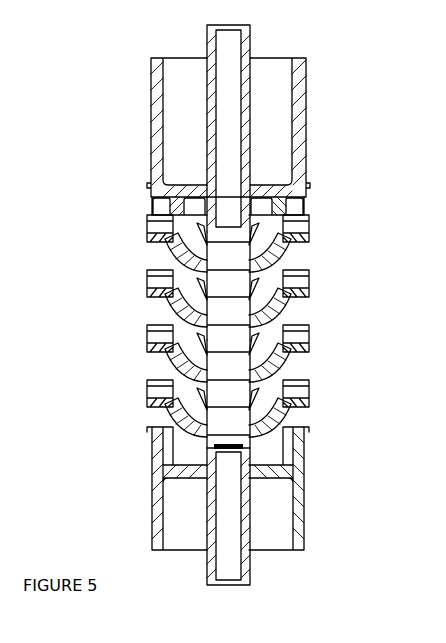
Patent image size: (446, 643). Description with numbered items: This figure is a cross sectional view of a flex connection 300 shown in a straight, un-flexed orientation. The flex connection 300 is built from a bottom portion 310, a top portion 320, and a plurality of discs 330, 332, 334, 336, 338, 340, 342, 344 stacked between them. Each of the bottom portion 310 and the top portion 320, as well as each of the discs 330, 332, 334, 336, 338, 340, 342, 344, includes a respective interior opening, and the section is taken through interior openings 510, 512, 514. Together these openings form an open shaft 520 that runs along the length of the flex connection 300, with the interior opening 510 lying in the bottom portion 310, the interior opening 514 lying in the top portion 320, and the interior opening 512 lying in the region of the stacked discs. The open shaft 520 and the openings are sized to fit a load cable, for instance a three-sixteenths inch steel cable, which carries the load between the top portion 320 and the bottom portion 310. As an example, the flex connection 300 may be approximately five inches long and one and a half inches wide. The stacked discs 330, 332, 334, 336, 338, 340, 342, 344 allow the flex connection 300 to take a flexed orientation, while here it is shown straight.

The flex connection 300 is at (104, 29).
The bottom portion 310 is at (152, 449).
The top portion 320 is at (151, 80).
The disc 330 is at (150, 416).
The disc 332 is at (150, 388).
The disc 334 is at (150, 363).
The disc 336 is at (150, 335).
The disc 338 is at (150, 306).
The disc 340 is at (150, 277).
The disc 342 is at (150, 252).
The disc 344 is at (150, 224).
The interior opening 510 is at (227, 525).
The interior opening 512 is at (228, 428).
The interior opening 514 is at (227, 110).
The open shaft 520 is at (228, 207).